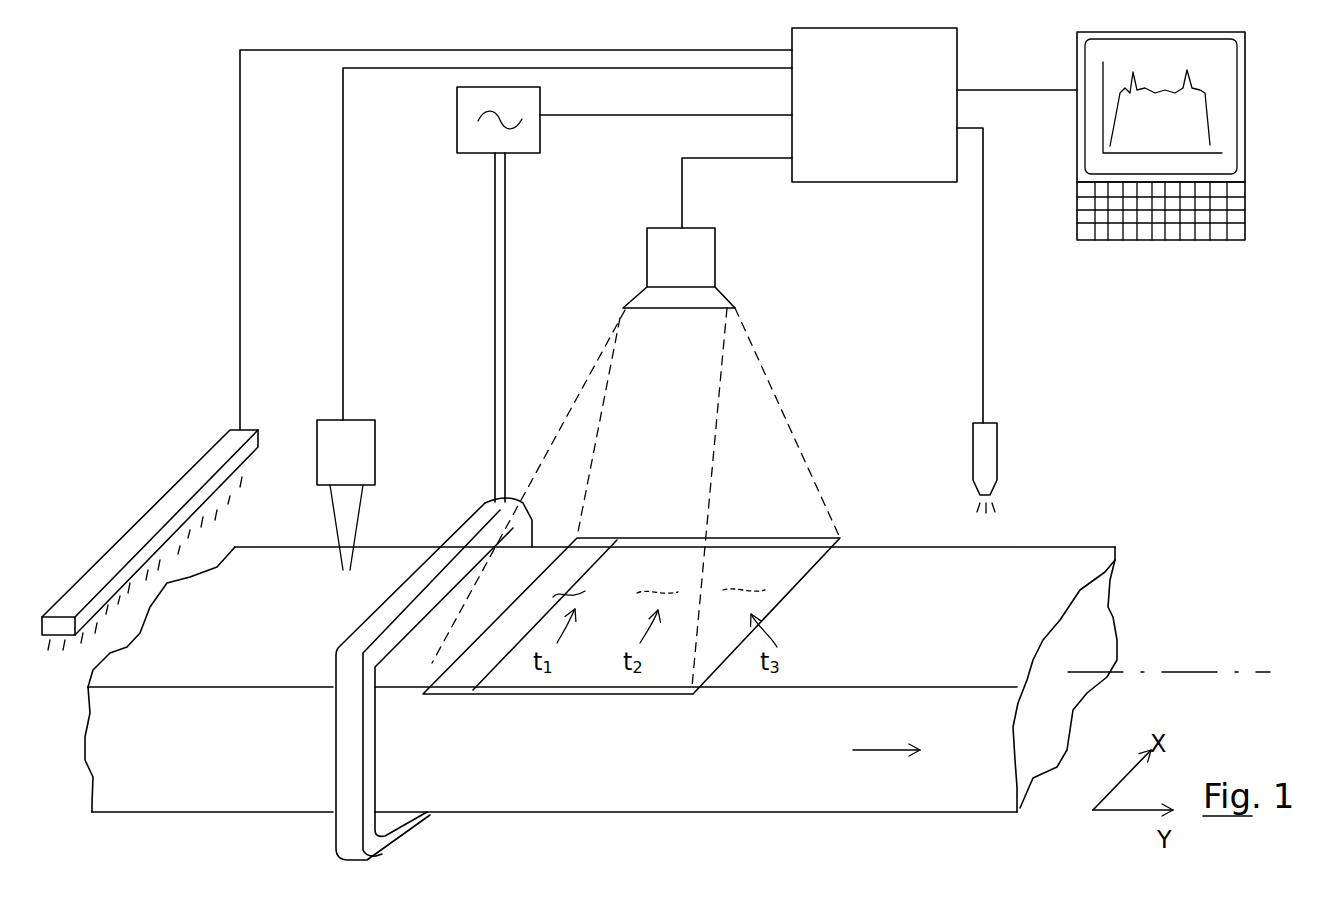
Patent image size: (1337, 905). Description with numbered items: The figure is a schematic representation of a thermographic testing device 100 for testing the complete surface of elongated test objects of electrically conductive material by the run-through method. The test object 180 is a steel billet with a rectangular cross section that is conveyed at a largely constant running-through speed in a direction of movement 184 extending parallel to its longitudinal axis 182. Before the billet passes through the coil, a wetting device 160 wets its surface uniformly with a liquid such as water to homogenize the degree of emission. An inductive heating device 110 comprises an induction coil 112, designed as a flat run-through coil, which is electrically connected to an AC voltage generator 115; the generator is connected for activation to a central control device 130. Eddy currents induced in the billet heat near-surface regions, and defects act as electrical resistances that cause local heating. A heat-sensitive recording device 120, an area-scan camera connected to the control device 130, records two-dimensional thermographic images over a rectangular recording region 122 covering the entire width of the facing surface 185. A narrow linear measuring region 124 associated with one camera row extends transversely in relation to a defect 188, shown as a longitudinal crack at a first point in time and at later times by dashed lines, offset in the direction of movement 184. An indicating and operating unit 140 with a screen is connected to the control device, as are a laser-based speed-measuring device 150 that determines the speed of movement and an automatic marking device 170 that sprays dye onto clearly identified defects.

The thermographic testing device 100 is at (1142, 358).
The inductive heating device 110 is at (547, 296).
The induction coil 112 is at (527, 512).
The AC voltage generator 115 is at (530, 138).
The recording device 120 is at (715, 258).
The recording region 122 is at (820, 570).
The measuring region 124 is at (497, 663).
The central control device 130 is at (898, 118).
The indicating and operating unit 140 is at (1248, 125).
The speed-measuring device 150 is at (375, 447).
The wetting device 160 is at (205, 450).
The automatic marking device 170 is at (997, 470).
The test object 180 is at (1115, 563).
The longitudinal axis 182 is at (1196, 670).
The direction of movement 184 is at (877, 742).
The surface 185 is at (1075, 560).
The defect 188 is at (614, 530).